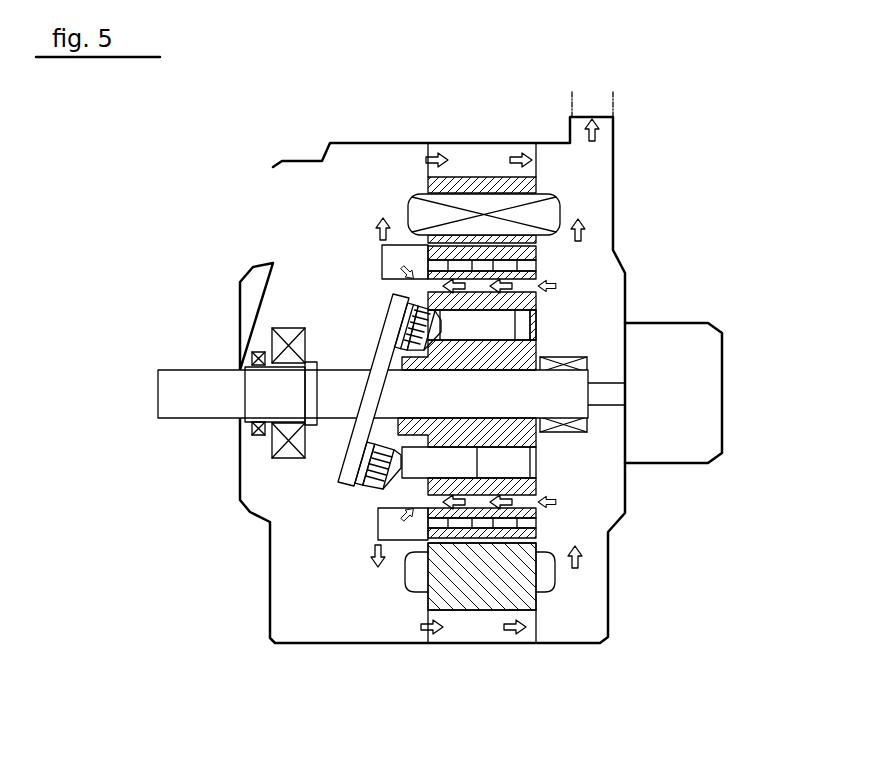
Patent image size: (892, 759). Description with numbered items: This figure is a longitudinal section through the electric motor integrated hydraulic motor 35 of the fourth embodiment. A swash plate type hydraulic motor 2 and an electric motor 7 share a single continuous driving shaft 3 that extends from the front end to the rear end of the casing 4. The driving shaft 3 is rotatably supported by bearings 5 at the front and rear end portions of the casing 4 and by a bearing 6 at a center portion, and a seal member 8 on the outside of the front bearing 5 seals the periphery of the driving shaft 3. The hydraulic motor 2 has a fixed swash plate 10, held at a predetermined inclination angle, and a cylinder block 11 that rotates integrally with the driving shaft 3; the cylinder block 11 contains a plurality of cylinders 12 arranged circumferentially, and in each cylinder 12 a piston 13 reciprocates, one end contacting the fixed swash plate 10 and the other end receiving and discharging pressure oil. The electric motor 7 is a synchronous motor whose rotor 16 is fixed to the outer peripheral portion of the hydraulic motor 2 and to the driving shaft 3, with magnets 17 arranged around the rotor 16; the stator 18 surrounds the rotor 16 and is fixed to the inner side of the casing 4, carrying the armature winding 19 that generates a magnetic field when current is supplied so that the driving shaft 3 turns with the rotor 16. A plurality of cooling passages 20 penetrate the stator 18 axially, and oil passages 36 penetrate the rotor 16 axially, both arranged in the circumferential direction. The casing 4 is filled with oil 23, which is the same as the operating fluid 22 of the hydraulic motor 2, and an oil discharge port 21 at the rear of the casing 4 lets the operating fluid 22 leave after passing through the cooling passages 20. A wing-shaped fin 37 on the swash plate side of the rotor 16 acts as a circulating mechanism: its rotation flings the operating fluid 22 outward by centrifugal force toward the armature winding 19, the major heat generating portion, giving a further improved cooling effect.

The swash plate type hydraulic motor 2 is at (330, 510).
The driving shaft 3 is at (182, 408).
The casing 4 is at (272, 228).
The bearing 5 is at (288, 453).
The bearing 6 is at (570, 358).
The electric motor 7 is at (566, 179).
The seal member 8 is at (253, 428).
The fixed swash plate 10 is at (387, 348).
The cylinder block 11 is at (510, 433).
The cylinder 12 is at (503, 465).
The piston 13 is at (420, 470).
The rotor 16 is at (553, 259).
The magnet 17 is at (547, 272).
The stator 18 is at (463, 175).
The armature winding 19 is at (550, 215).
The cooling passage 20 is at (498, 153).
The oil discharge port 21 is at (590, 117).
The operating fluid 22 is at (378, 218).
The oil 23 is at (336, 226).
The electric motor integrated hydraulic motor 35 is at (754, 80).
The oil passage 36 is at (520, 502).
The wing-shaped fin 37 is at (402, 257).